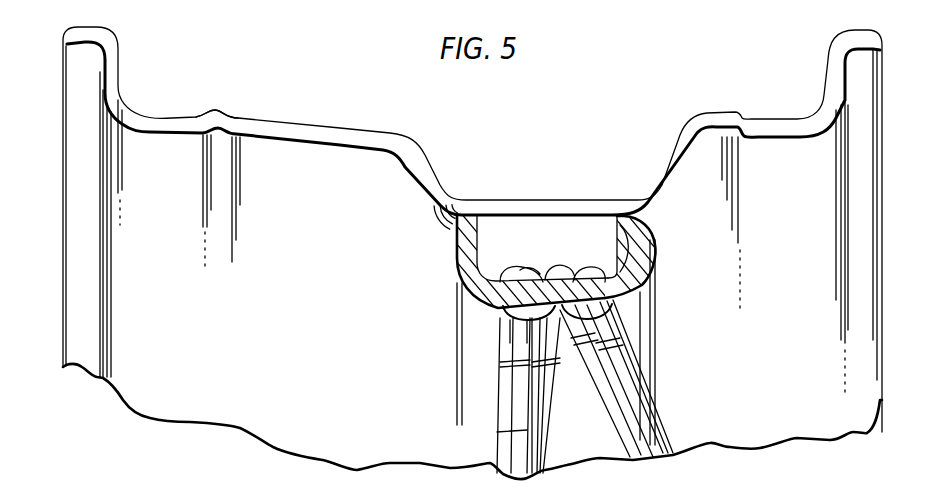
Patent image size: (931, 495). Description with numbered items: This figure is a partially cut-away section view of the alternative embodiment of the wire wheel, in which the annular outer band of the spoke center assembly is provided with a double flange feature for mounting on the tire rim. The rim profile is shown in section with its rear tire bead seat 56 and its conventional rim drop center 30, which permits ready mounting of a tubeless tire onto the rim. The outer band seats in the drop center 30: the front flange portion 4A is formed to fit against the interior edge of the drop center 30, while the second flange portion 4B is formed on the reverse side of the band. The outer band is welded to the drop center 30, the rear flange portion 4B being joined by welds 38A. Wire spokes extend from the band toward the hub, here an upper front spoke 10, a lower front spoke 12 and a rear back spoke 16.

The rear tire bead seat 56 is at (228, 118).
The rim drop center 30 is at (578, 199).
The welds 38A is at (433, 224).
The front flange portion 4A is at (660, 237).
The second flange portion 4B is at (464, 284).
The rear back spoke 16 is at (511, 394).
The lower front spoke 12 is at (613, 398).
The upper front spoke 10 is at (663, 428).